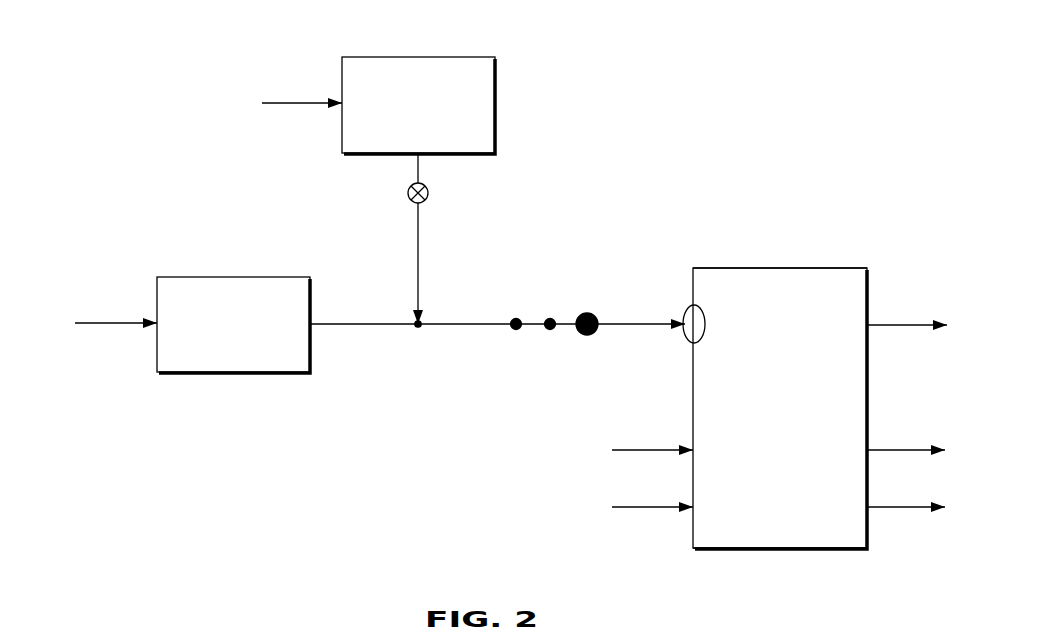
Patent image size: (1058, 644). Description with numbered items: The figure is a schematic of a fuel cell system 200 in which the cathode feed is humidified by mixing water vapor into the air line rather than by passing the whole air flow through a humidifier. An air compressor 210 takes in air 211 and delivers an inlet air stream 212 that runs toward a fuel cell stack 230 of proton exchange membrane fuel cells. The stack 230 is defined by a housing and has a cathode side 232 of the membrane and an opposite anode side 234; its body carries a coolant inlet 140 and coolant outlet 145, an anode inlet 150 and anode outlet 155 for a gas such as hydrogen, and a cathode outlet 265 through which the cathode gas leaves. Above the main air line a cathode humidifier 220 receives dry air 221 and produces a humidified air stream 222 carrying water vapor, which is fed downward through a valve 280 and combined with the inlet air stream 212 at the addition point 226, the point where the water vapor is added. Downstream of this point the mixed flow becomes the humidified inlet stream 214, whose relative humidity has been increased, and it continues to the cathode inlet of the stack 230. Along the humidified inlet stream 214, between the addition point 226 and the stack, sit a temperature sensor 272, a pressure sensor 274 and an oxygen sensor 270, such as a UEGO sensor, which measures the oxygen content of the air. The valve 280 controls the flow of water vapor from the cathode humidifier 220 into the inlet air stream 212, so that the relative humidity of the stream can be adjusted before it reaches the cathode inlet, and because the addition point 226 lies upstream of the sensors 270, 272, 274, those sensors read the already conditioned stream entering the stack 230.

The fuel cell system 200 is at (757, 150).
The air compressor 210 is at (251, 336).
The air 211 is at (122, 322).
The inlet air stream 212 is at (400, 321).
The humidified inlet stream 214 is at (497, 321).
The cathode humidifier 220 is at (436, 115).
The dry air 221 is at (310, 101).
The humidified air stream 222 is at (415, 268).
The junction point 226 is at (420, 327).
The fuel cell stack 230 is at (795, 419).
The cathode side 232 is at (780, 267).
The anode side 234 is at (780, 549).
The cathode outlet 265 is at (897, 324).
The oxygen sensor 270 is at (588, 312).
The temperature sensor 272 is at (516, 317).
The pressure sensor 274 is at (550, 317).
The valve 280 is at (428, 192).
The coolant inlet 140 is at (660, 449).
The anode inlet 150 is at (660, 506).
The coolant outlet 145 is at (897, 449).
The anode outlet 155 is at (897, 506).